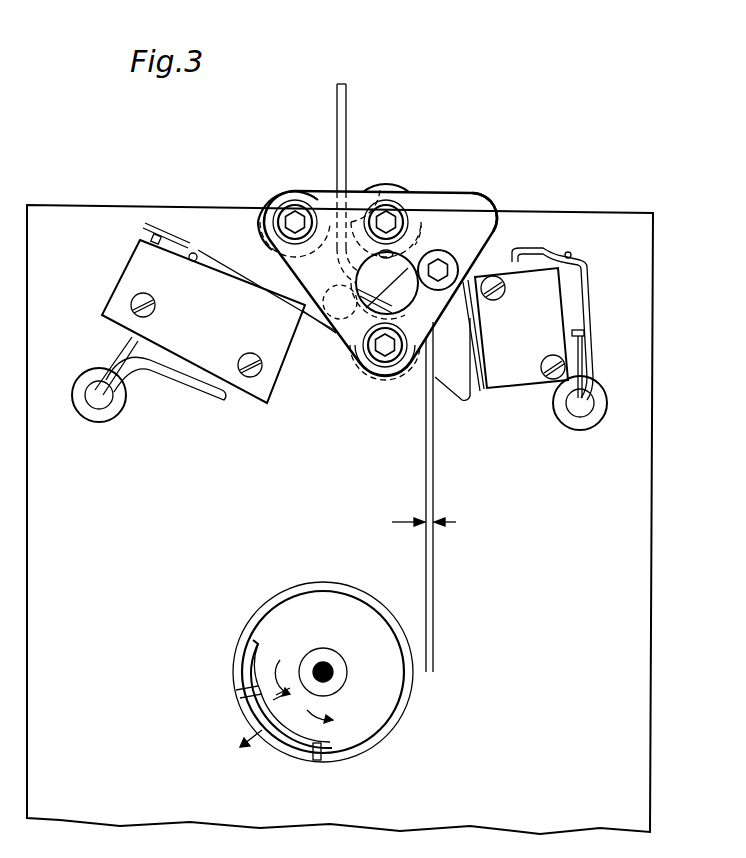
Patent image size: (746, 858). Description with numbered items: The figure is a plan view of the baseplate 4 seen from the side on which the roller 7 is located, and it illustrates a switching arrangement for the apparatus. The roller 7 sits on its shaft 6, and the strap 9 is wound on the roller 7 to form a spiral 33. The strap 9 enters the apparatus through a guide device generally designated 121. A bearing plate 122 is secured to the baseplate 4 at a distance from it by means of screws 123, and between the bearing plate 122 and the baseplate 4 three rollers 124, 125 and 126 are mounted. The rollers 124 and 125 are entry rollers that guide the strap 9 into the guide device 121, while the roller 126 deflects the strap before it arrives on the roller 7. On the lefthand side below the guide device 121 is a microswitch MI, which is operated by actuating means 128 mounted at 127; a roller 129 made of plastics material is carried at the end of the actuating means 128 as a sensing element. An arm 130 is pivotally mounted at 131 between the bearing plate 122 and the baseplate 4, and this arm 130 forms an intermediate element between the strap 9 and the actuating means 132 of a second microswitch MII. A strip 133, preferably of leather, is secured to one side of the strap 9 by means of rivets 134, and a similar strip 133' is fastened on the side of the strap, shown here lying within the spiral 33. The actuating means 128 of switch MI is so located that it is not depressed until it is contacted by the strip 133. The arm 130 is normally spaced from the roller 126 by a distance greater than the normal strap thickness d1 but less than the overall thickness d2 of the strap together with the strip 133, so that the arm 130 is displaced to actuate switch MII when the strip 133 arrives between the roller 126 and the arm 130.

The baseplate 4 is at (607, 228).
The shaft 6 is at (333, 655).
The roller 7 is at (378, 697).
The strap 9 is at (340, 107).
The spiral 33 is at (407, 682).
The guide device 121 is at (447, 192).
The bearing plate 122 is at (490, 207).
The screws 123 is at (367, 232).
The entry roller 124 is at (268, 204).
The entry roller 125 is at (384, 190).
The roller 126 is at (397, 376).
The mounting 127 is at (191, 252).
The actuating means 128 is at (312, 323).
The roller 129 is at (324, 296).
The arm 130 is at (458, 400).
The pivot 131 is at (445, 264).
The actuating means 132 is at (480, 380).
The strip 133 is at (340, 261).
The rivets 134 is at (387, 282).
The strip 133' is at (339, 739).
The strap thickness d1 is at (432, 516).
The overall thickness of strap and strip d2 is at (239, 719).
The microswitch MI is at (188, 331).
The microswitch MII is at (541, 339).